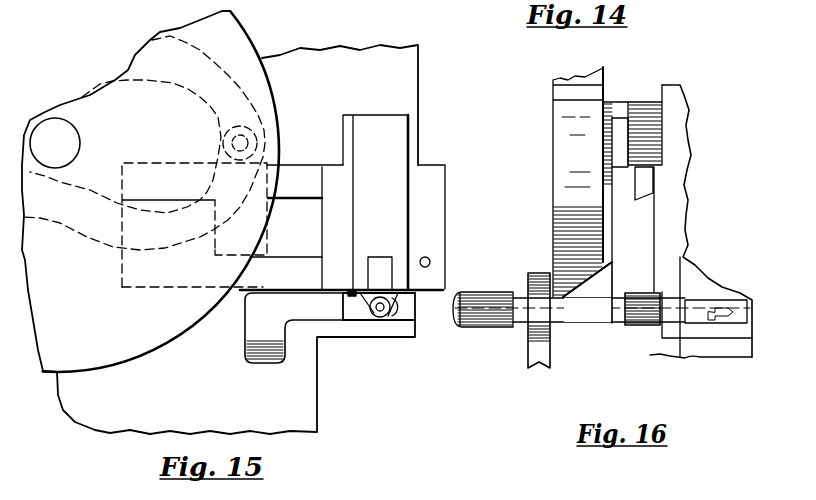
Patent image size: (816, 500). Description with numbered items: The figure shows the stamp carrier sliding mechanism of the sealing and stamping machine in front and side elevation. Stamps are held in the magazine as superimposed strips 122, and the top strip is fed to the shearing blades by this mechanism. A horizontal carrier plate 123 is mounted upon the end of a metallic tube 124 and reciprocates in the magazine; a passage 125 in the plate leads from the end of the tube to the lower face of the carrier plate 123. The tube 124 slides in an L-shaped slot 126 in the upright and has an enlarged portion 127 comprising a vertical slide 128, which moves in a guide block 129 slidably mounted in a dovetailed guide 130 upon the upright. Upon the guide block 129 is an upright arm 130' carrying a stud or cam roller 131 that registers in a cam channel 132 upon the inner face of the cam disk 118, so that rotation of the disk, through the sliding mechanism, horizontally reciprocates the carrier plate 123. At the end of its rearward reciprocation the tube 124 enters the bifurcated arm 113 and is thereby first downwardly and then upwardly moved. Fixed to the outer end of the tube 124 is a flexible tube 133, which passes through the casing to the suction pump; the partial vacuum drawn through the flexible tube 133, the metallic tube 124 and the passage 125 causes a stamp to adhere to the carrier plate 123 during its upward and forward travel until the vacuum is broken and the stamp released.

In FIG. 16, the bifurcated arm 113 is at (530, 358).
In FIG. 15, the cam disk 118 is at (90, 355).
In FIG. 15, the superimposed strips 122 is at (270, 365).
In FIG. 15, the horizontal carrier plate 123 is at (358, 318).
In FIG. 16, the horizontal carrier plate 123 is at (723, 302).
In FIG. 15, the metallic tube 124 is at (392, 312).
In FIG. 16, the metallic tube 124 is at (640, 326).
In FIG. 16, the passage 125 is at (710, 320).
In FIG. 15, the L-shaped slot 126 is at (262, 315).
In FIG. 15, the enlarged portion 127 is at (388, 276).
In FIG. 16, the enlarged portion 127 is at (588, 318).
In FIG. 15, the vertical slide 128 is at (418, 135).
In FIG. 15, the guide block 129 is at (437, 198).
In FIG. 16, the guide block 129 is at (620, 202).
In FIG. 15, the dovetailed guide 130 is at (305, 204).
In FIG. 16, the dovetailed guide 130 is at (683, 227).
In FIG. 15, the upright arm 130' is at (286, 238).
In FIG. 15, the cam roller 131 is at (255, 125).
In FIG. 15, the cam channel 132 is at (212, 63).
In FIG. 16, the flexible tube 133 is at (487, 328).